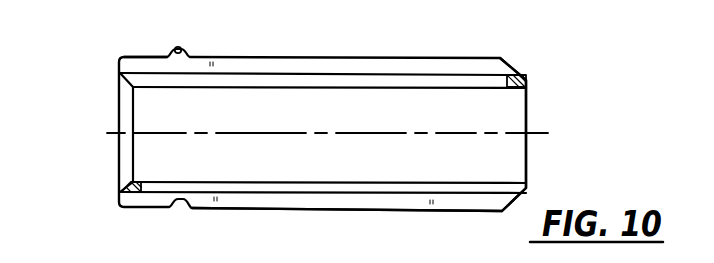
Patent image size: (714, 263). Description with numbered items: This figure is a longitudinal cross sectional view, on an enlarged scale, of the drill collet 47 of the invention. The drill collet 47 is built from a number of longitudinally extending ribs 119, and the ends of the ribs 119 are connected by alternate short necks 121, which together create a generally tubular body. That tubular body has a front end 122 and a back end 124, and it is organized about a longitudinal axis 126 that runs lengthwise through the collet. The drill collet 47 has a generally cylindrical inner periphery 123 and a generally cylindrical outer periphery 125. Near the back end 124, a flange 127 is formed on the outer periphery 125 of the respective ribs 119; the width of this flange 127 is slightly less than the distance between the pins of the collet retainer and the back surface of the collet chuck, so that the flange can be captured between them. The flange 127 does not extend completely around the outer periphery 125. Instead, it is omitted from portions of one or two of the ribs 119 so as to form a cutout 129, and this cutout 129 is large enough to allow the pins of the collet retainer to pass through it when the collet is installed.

The drill collet 47 is at (151, 208).
The longitudinally extending ribs 119 is at (358, 75).
The short necks 121 is at (530, 80).
The front end 122 is at (528, 170).
The inner periphery 123 is at (200, 178).
The back end 124 is at (118, 108).
The outer periphery 125 is at (136, 56).
The longitudinal axis 126 is at (111, 130).
The flange 127 is at (180, 208).
The cutout 129 is at (183, 49).